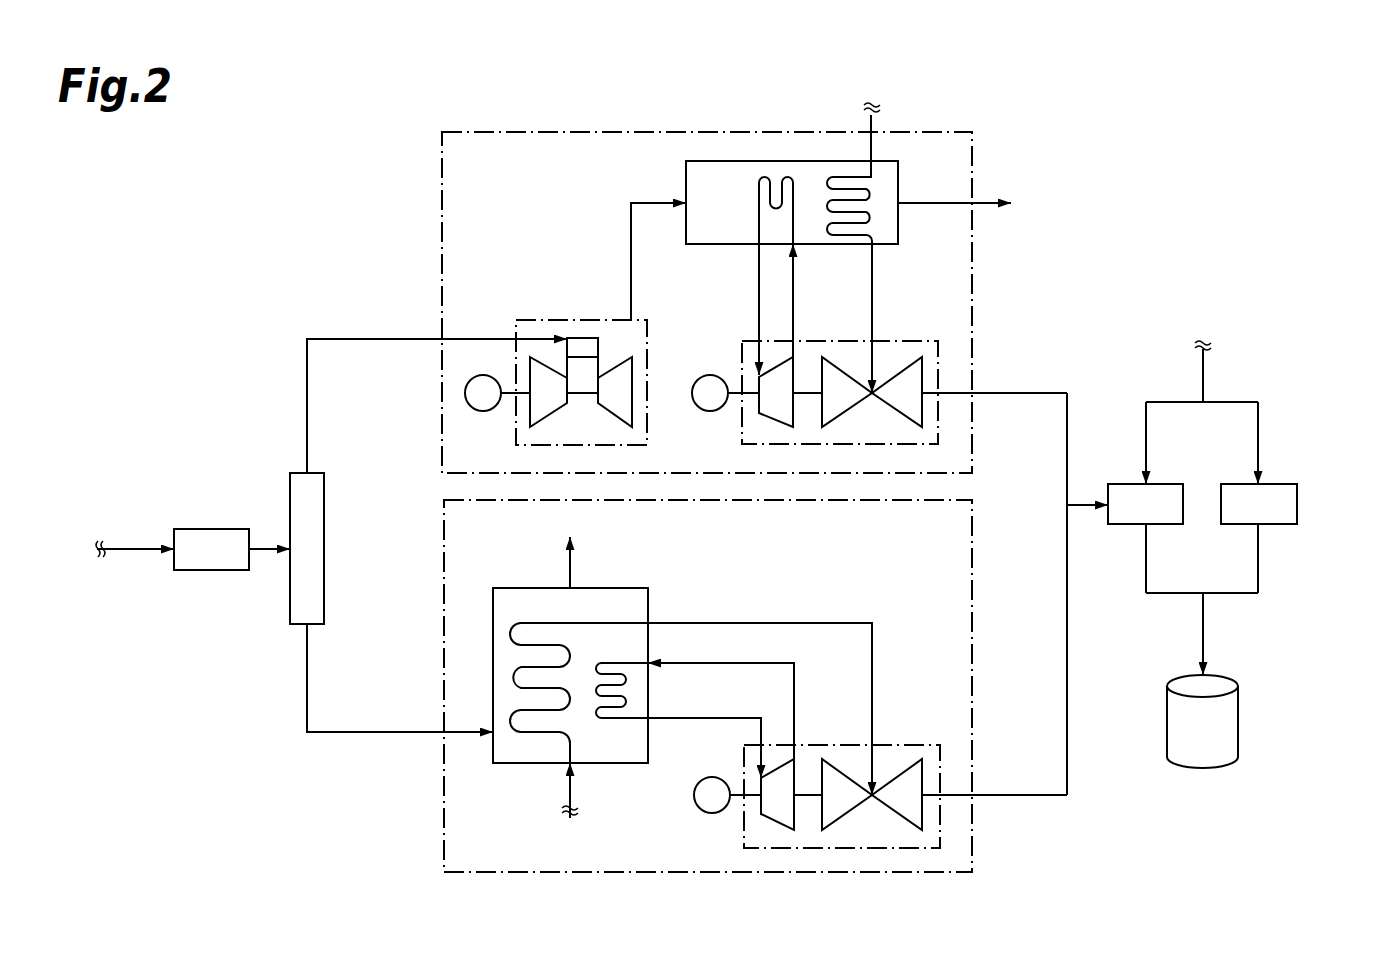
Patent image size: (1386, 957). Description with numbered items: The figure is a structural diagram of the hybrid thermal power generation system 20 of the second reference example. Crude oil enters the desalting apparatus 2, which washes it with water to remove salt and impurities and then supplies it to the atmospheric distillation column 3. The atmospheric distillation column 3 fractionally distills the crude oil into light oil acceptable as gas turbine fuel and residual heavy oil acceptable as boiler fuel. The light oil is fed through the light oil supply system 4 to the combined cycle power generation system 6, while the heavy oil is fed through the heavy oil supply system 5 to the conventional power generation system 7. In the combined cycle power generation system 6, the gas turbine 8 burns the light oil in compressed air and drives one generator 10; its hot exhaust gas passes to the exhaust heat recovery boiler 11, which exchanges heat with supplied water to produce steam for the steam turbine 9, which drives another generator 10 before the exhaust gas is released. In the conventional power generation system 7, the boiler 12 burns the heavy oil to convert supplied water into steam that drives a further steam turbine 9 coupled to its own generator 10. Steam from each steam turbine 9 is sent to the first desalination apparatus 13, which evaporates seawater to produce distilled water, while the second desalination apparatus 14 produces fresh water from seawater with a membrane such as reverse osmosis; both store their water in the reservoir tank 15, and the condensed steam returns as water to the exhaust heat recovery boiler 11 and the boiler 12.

The desalting apparatus 2 is at (222, 529).
The atmospheric distillation column 3 is at (324, 500).
The light oil supply system 4 is at (346, 338).
The heavy oil supply system 5 is at (346, 731).
The combined cycle power generation system 6 is at (973, 150).
The conventional power generation system 7 is at (973, 519).
The gas turbine 8 is at (545, 318).
The steam turbine 9 is at (912, 340).
The generator 10 is at (483, 411).
The exhaust heat recovery boiler 11 is at (686, 180).
The boiler 12 is at (616, 588).
The desalination apparatus 13 is at (1160, 484).
The desalination apparatus 14 is at (1272, 484).
The reservoir tank 15 is at (1238, 705).
The hybrid thermal power generation system 20 is at (1180, 145).